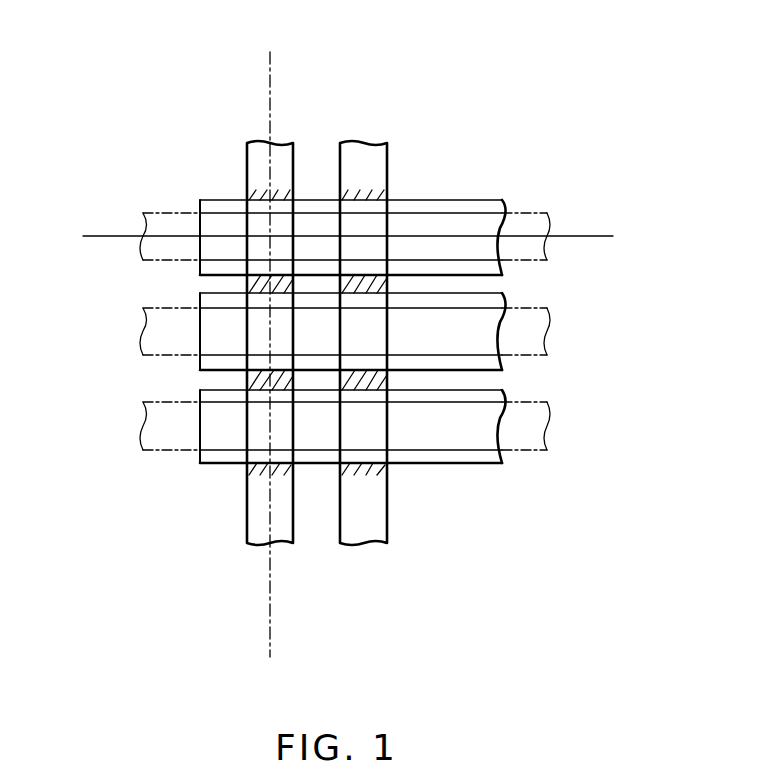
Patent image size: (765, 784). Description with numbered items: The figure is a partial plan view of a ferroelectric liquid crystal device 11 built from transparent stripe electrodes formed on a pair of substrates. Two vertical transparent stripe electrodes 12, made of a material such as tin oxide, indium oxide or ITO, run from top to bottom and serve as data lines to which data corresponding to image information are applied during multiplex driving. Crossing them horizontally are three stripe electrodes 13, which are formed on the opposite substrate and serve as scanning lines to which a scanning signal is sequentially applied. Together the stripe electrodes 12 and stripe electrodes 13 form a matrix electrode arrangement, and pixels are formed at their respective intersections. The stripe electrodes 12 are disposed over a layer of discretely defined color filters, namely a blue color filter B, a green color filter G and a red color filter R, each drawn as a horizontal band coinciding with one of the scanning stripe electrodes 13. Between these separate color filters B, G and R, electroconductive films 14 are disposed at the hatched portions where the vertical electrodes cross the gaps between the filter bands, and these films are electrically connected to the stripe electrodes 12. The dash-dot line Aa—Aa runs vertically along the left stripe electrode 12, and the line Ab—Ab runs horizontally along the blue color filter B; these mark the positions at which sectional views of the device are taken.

The ferroelectric liquid crystal device 11 is at (396, 123).
The stripe electrodes 12 is at (347, 142).
The stripe electrodes 13 is at (548, 252).
The electroconductive films 14 is at (247, 380).
The blue color filter B is at (507, 200).
The green color filter G is at (500, 302).
The red color filter R is at (498, 456).
The line Aa— Aa is at (270, 355).
The line Ab— Ab is at (347, 236).